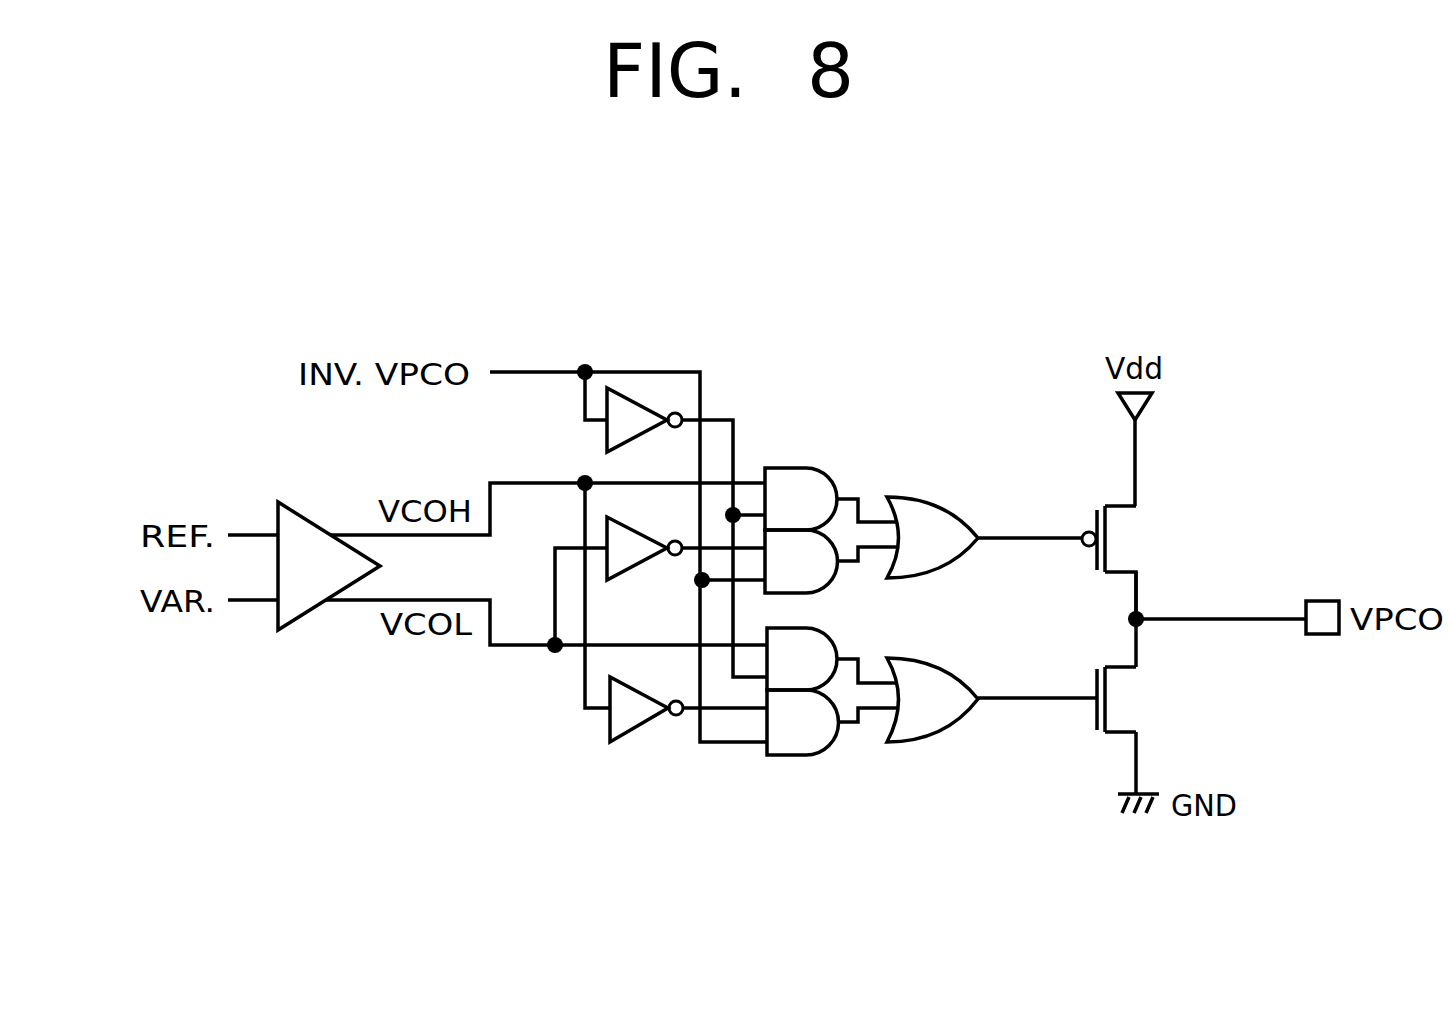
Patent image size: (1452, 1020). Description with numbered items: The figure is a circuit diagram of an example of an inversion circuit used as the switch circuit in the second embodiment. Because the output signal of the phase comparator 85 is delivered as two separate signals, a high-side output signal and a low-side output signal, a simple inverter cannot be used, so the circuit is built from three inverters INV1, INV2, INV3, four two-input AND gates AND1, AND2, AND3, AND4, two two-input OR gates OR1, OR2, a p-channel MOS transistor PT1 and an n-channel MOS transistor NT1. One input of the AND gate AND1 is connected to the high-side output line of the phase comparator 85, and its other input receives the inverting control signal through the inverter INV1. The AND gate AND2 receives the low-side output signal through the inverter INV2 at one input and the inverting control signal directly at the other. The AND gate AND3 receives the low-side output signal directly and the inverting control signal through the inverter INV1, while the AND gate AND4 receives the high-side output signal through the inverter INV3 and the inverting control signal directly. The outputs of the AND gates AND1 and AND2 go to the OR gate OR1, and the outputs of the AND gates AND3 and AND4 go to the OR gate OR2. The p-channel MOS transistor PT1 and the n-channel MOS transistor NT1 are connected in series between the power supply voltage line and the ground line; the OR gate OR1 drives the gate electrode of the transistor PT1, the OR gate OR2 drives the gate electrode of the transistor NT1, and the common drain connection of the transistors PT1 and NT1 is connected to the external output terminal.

The phase comparator 85 is at (322, 618).
The inverter INV1 is at (648, 405).
The inverter INV2 is at (641, 533).
The inverter INV3 is at (643, 725).
The 2-input AND gate AND1 is at (802, 468).
The 2-input AND gate AND2 is at (828, 588).
The 2-input AND gate AND3 is at (838, 650).
The 2-input AND gate AND4 is at (800, 758).
The 2-input OR gate OR1 is at (958, 497).
The 2-input OR gate OR2 is at (937, 742).
The p-channel MOS transistor PT1 is at (1122, 541).
The n-channel MOS transistor NT1 is at (1122, 701).